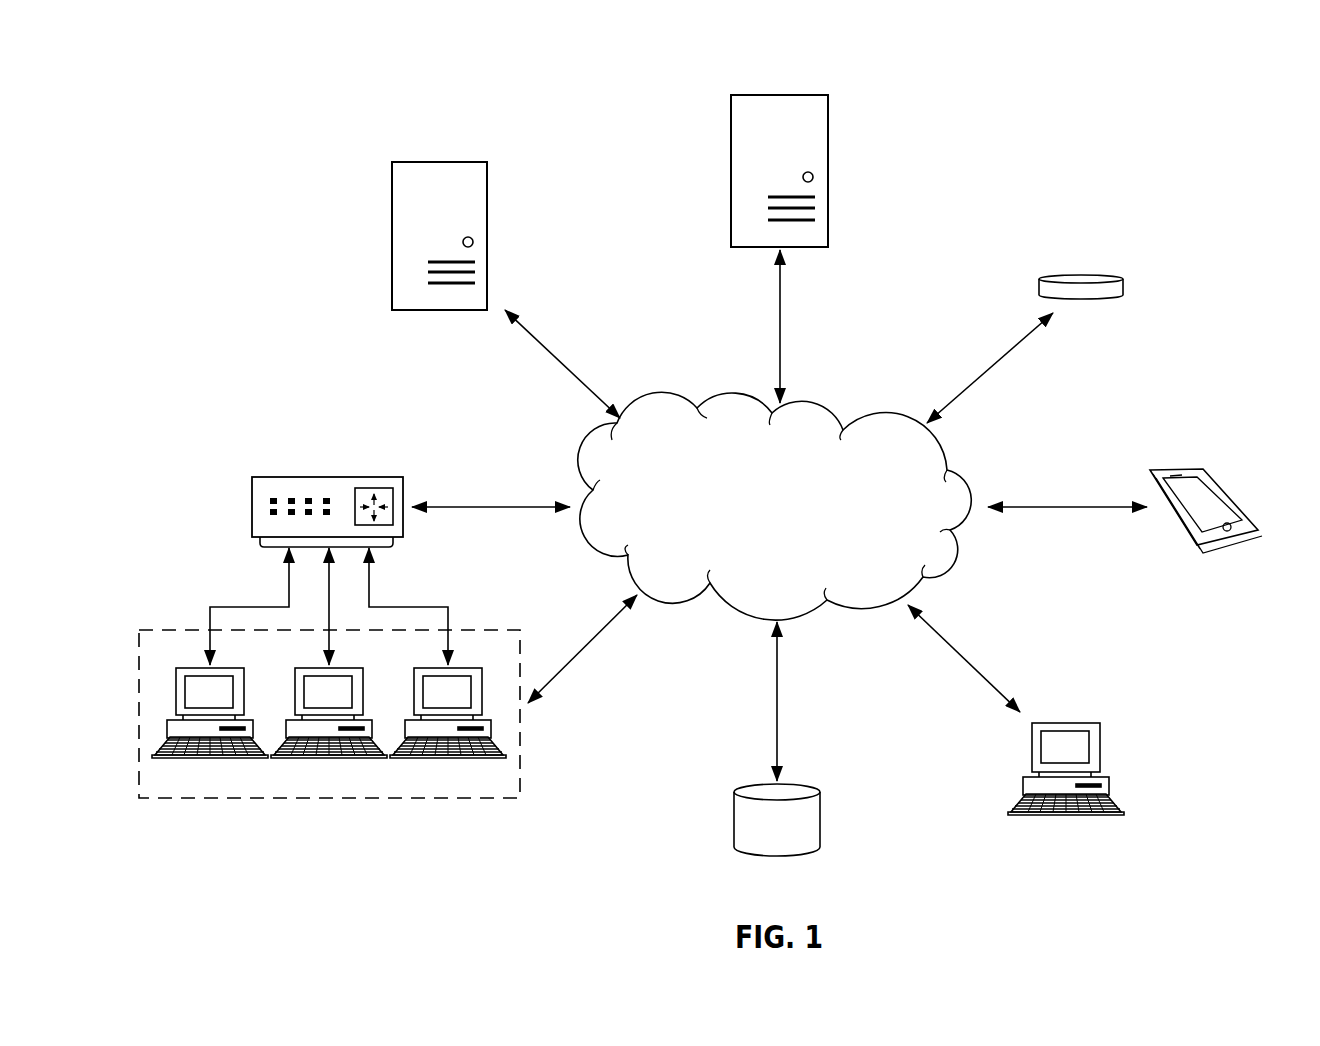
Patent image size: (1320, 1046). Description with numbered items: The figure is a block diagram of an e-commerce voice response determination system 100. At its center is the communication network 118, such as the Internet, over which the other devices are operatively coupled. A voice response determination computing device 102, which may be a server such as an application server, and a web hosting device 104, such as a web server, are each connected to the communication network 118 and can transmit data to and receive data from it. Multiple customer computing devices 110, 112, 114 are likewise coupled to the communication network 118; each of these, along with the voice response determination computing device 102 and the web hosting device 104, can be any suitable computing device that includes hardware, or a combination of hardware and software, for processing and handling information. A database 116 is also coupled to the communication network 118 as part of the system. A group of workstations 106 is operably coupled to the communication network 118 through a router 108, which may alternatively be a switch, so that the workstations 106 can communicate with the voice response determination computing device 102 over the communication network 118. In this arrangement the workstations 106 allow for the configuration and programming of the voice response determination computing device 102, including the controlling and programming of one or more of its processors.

The e-commerce voice response determination system 100 is at (1167, 90).
The voice response determination computing device 102 is at (803, 93).
The web hosting device 104 is at (412, 160).
The workstation(s) 106 is at (178, 630).
The router 108 is at (278, 475).
The customer computing device 110 is at (1100, 273).
The customer computing device 112 is at (1227, 497).
The customer computing device 114 is at (1088, 723).
The database 116 is at (805, 788).
The communication network 118 is at (820, 400).